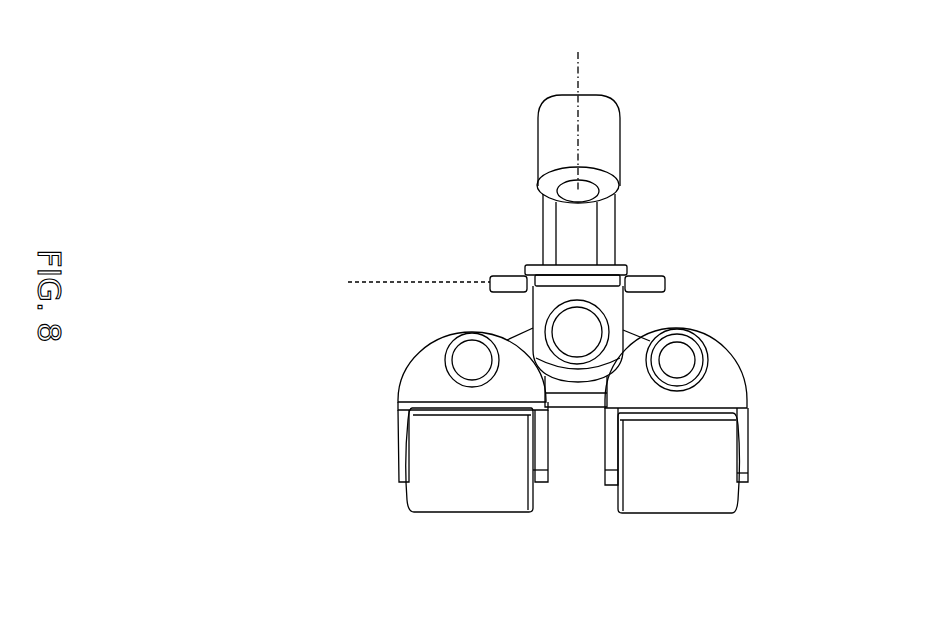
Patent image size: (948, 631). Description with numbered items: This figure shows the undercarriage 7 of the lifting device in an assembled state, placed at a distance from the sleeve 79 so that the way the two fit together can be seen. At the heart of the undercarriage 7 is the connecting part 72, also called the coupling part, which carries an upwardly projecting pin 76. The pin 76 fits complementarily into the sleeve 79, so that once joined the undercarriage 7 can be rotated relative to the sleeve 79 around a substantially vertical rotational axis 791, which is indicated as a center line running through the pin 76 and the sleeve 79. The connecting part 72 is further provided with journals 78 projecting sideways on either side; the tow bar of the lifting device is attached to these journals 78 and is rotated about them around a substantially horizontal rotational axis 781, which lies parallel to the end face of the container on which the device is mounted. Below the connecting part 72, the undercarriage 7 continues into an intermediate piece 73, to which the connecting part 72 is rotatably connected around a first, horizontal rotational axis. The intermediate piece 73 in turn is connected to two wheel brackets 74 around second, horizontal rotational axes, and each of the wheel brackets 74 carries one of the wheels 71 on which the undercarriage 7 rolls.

The undercarriage 7 is at (498, 245).
The wheels 71 is at (738, 502).
The connecting part 72 is at (623, 313).
The intermediate piece 73 is at (633, 334).
The wheel brackets 74 is at (738, 375).
The pin 76 is at (597, 232).
The journals 78 is at (627, 294).
The rotational axis 781 is at (665, 283).
The sleeve 79 is at (620, 133).
The rotational axis 791 is at (578, 52).